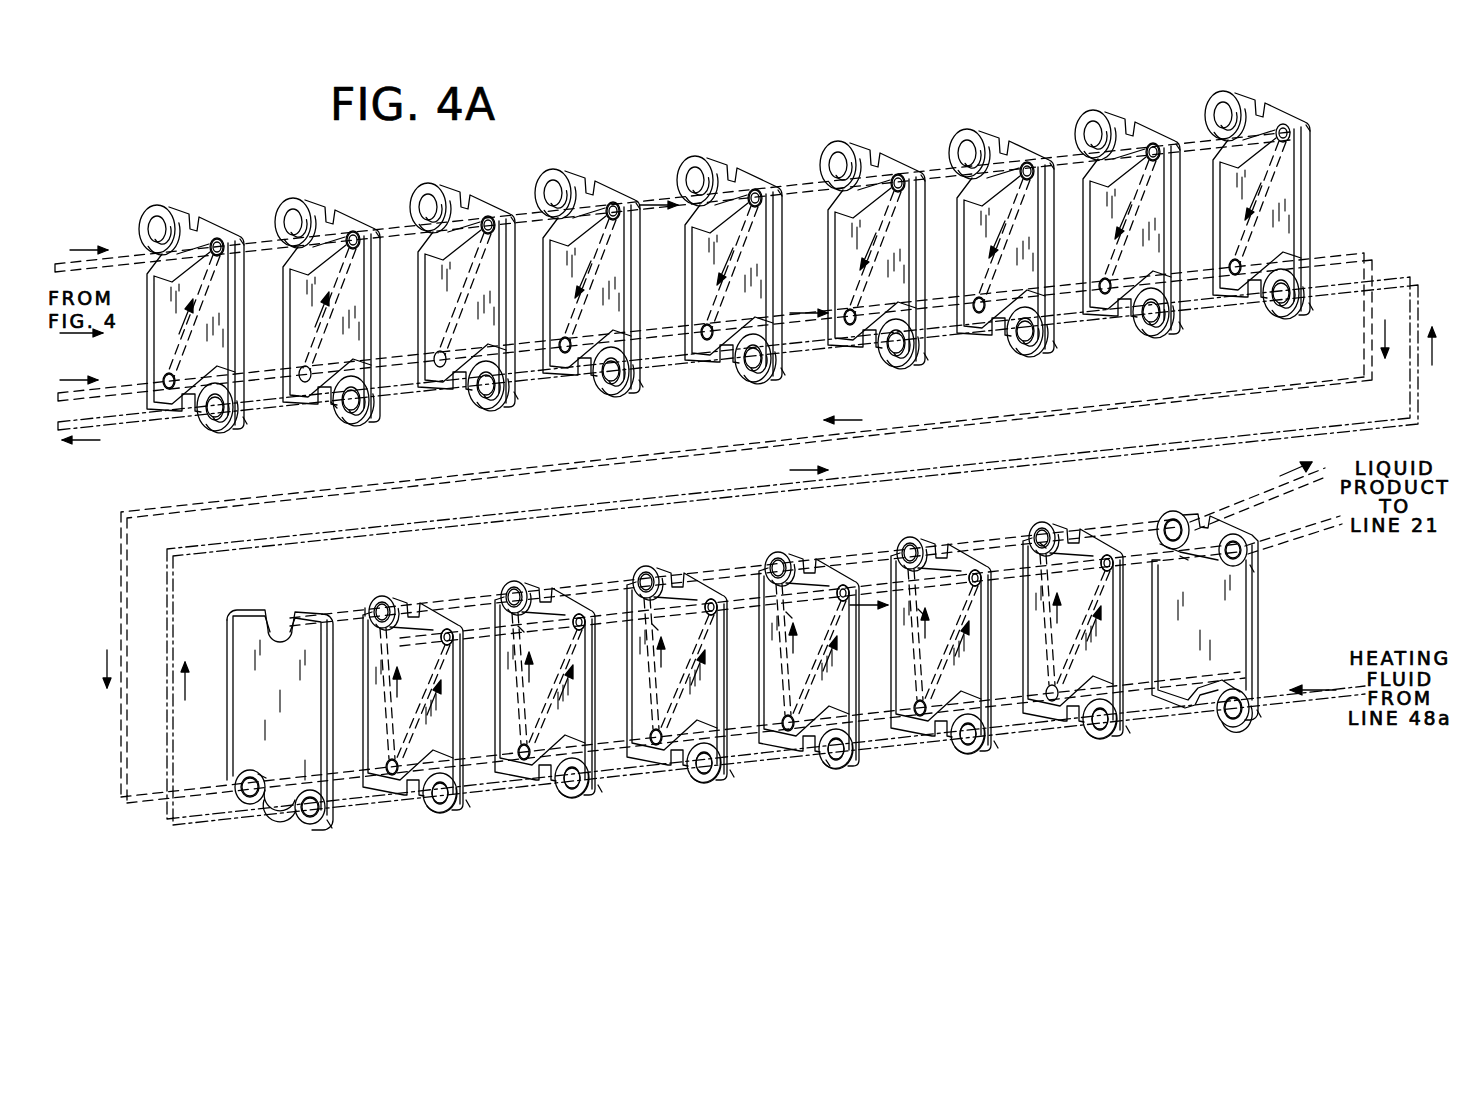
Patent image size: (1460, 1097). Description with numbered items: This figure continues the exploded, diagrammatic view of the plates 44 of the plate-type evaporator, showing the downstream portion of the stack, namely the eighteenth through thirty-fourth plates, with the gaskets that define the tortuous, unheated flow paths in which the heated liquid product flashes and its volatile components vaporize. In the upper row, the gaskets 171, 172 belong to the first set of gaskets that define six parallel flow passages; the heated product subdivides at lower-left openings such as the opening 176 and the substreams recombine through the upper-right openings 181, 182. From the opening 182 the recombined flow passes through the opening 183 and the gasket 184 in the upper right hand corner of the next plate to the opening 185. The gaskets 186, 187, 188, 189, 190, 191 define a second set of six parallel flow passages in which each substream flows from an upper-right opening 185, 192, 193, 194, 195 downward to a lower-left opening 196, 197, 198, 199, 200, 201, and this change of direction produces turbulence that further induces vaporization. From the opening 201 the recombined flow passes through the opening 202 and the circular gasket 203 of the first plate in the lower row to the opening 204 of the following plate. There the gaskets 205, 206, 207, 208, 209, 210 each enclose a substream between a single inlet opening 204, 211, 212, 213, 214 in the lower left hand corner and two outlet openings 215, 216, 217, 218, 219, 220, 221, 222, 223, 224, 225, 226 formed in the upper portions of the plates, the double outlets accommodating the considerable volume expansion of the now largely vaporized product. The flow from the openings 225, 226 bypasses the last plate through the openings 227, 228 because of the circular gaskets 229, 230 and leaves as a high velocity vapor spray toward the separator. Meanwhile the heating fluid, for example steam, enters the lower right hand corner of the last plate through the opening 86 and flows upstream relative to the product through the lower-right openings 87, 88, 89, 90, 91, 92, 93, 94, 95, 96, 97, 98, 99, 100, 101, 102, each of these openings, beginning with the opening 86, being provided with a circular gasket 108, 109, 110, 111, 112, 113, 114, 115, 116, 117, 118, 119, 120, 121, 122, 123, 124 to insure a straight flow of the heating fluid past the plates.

The plates 44 is at (1195, 515).
The gasket 171 is at (241, 241).
The gasket 172 is at (377, 234).
The opening 181 is at (217, 239).
The opening 182 is at (353, 232).
The opening 183 is at (488, 217).
The gasket 184 is at (512, 219).
The opening 185 is at (613, 203).
The gasket 186 is at (637, 205).
The gasket 187 is at (779, 192).
The gasket 188 is at (922, 177).
The gasket 189 is at (1051, 165).
The gasket 190 is at (1177, 146).
The gasket 191 is at (1307, 127).
The opening 192 is at (755, 190).
The opening 193 is at (898, 175).
The opening 194 is at (1027, 163).
The opening 195 is at (1153, 144).
The opening 176 is at (164, 379).
The opening 196 is at (563, 352).
The opening 197 is at (705, 339).
The opening 198 is at (848, 324).
The opening 199 is at (977, 312).
The opening 200 is at (1103, 293).
The opening 201 is at (1233, 274).
The opening 94 is at (1281, 304).
The opening 95 is at (1150, 323).
The opening 96 is at (1023, 342).
The opening 97 is at (895, 354).
The opening 98 is at (752, 369).
The opening 99 is at (610, 382).
The opening 100 is at (484, 396).
The opening 101 is at (349, 411).
The opening 102 is at (211, 418).
The circular gasket 116 is at (1311, 311).
The circular gasket 117 is at (1181, 330).
The circular gasket 118 is at (1055, 349).
The circular gasket 119 is at (926, 361).
The circular gasket 120 is at (783, 376).
The circular gasket 121 is at (641, 388).
The circular gasket 122 is at (515, 400).
The circular gasket 123 is at (333, 406).
The circular gasket 124 is at (243, 426).
The opening 202 is at (253, 796).
The circular gasket 203 is at (262, 775).
The opening 204 is at (390, 774).
The gasket 205 is at (377, 600).
The gasket 206 is at (510, 587).
The gasket 207 is at (643, 572).
The gasket 208 is at (775, 558).
The gasket 209 is at (906, 543).
The gasket 210 is at (1037, 528).
The inlet opening 211 is at (522, 759).
The inlet opening 212 is at (654, 744).
The inlet opening 213 is at (786, 730).
The inlet opening 214 is at (918, 715).
The outlet opening 215 is at (367, 612).
The outlet opening 216 is at (449, 629).
The outlet opening 217 is at (522, 630).
The outlet opening 218 is at (580, 614).
The outlet opening 219 is at (656, 628).
The outlet opening 220 is at (712, 599).
The outlet opening 221 is at (790, 616).
The outlet opening 222 is at (844, 585).
The outlet opening 223 is at (922, 612).
The outlet opening 224 is at (975, 570).
The outlet opening 225 is at (1046, 548).
The outlet opening 226 is at (1107, 555).
The outlet opening 227 is at (1170, 520).
The outlet opening 228 is at (1242, 547).
The circular gasket 229 is at (1184, 560).
The circular gasket 230 is at (1252, 568).
The opening 86 is at (1231, 719).
The opening 87 is at (1100, 730).
The opening 88 is at (966, 745).
The opening 89 is at (837, 760).
The opening 90 is at (704, 774).
The opening 91 is at (572, 789).
The opening 92 is at (440, 804).
The opening 93 is at (310, 818).
The circular gasket 108 is at (1250, 722).
The circular gasket 109 is at (1128, 736).
The circular gasket 110 is at (996, 751).
The circular gasket 111 is at (828, 763).
The circular gasket 112 is at (732, 781).
The circular gasket 113 is at (600, 796).
The circular gasket 114 is at (468, 811).
The circular gasket 115 is at (329, 826).